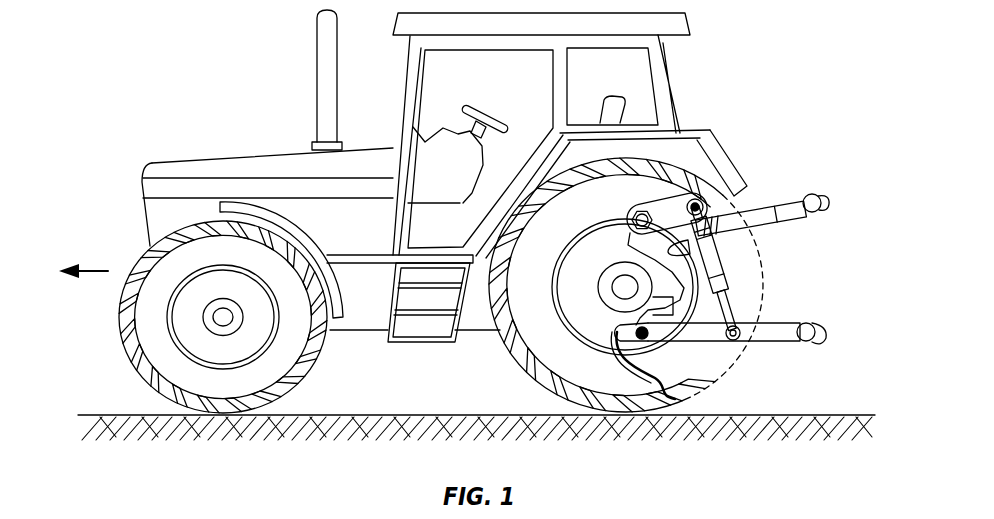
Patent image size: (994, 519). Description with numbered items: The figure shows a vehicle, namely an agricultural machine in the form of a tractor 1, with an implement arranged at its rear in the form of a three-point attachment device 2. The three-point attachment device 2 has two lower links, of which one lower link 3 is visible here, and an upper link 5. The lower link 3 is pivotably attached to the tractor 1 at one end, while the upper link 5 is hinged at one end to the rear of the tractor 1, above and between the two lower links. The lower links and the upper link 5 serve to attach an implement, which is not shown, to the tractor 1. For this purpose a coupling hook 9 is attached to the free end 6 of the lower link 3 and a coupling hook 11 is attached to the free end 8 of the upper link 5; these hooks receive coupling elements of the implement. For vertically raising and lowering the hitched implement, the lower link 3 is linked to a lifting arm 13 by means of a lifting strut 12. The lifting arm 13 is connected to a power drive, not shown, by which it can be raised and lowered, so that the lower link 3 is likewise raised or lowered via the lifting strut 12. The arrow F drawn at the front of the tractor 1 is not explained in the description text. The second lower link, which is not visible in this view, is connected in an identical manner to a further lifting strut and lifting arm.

The tractor 1 is at (262, 97).
The three-point attachment device 2 is at (860, 221).
The lower link 3 is at (780, 328).
The upper link 5 is at (772, 213).
The free end of the lower link 6 is at (856, 345).
The free end of the upper link 8 is at (837, 192).
The coupling hook 9 is at (812, 343).
The coupling hook 11 is at (807, 200).
The lifting strut 12 is at (733, 280).
The lifting arm 13 is at (673, 212).
The direction of travel F is at (96, 271).